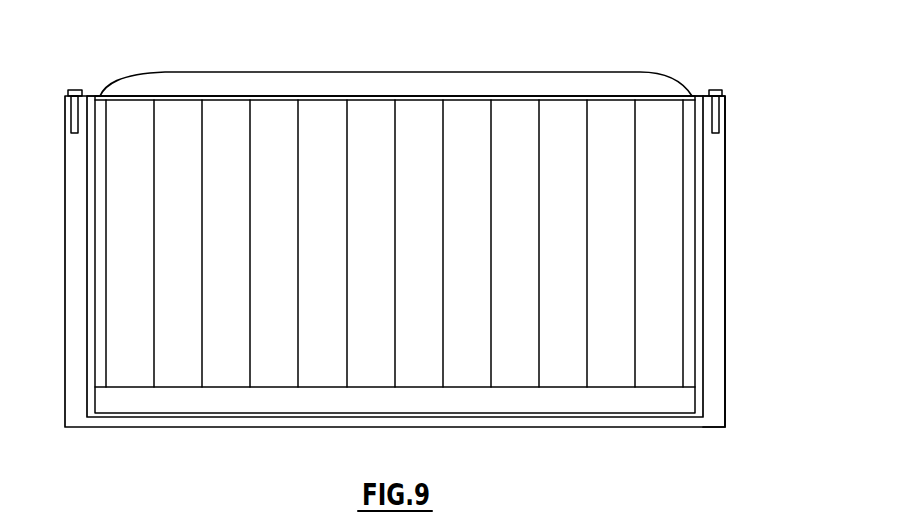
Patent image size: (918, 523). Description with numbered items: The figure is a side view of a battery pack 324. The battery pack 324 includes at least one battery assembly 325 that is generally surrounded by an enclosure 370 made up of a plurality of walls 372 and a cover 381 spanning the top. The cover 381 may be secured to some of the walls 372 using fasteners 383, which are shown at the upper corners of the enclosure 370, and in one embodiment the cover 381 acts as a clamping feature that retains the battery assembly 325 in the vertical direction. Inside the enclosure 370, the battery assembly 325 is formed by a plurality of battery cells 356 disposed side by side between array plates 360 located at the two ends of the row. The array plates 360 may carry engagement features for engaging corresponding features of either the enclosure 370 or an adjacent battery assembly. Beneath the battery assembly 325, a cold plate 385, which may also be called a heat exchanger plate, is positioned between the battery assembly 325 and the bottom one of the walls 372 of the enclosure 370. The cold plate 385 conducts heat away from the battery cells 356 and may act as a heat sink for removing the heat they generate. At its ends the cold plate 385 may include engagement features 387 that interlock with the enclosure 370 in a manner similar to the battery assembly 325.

The battery pack 324 is at (559, 48).
The battery assembly 325 is at (395, 215).
The battery cells 356 is at (493, 88).
The array plates 360 is at (101, 103).
The enclosure 370 is at (737, 160).
The walls 372 is at (66, 392).
The cover 381 is at (165, 72).
The fasteners 383 is at (75, 90).
The cold plate 385 is at (407, 395).
The engagement features 387 is at (94, 416).